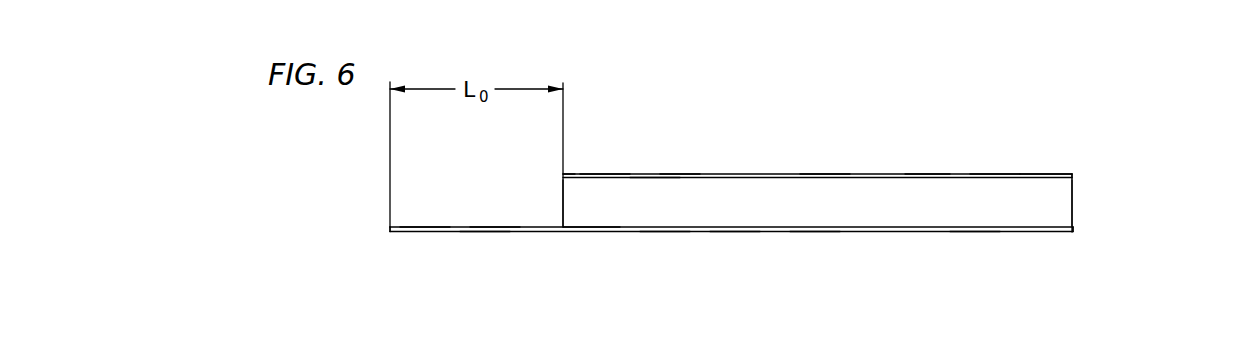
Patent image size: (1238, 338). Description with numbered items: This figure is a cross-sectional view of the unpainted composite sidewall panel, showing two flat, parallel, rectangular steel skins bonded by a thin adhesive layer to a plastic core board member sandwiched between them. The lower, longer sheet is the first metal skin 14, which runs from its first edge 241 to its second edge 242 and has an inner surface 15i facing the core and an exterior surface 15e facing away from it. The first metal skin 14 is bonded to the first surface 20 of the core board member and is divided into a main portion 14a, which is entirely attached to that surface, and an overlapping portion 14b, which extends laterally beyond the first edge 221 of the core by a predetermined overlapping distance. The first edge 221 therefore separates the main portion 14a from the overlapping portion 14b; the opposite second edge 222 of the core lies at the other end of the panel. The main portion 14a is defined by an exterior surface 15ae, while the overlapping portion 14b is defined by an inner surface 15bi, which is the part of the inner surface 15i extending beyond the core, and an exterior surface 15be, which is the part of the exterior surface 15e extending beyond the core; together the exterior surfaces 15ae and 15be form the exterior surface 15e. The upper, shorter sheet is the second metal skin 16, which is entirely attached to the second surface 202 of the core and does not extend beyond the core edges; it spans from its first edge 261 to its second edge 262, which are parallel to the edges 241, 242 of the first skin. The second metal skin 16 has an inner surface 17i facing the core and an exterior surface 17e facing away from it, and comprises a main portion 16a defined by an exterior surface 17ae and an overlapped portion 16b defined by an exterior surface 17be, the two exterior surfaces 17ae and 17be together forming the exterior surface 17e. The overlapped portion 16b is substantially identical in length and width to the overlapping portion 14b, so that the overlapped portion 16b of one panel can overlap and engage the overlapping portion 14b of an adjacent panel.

The first metal skin 14 is at (880, 238).
The main portion 14a is at (732, 232).
The overlapping portion 14b is at (497, 226).
The inner surface of overlapping portion 15bi is at (425, 225).
The exterior surface of overlapping portion 15be is at (482, 232).
The inner surface of first metal skin 15i is at (593, 226).
The exterior surface of main portion 15ae is at (812, 232).
The exterior surface of first metal skin 15e is at (975, 232).
The second metal skin 16 is at (887, 162).
The main portion 16a is at (985, 173).
The overlapped portion 16b is at (602, 172).
The exterior surface of overlapped portion 17be is at (677, 172).
The inner surface of second metal skin 17i is at (650, 178).
The exterior surface of second metal skin 17e is at (817, 173).
The exterior surface of main portion 17ae is at (922, 173).
The first surface 20 is at (665, 232).
The second surface 202 is at (1036, 173).
The first edge 221 is at (562, 207).
The second edge 222 is at (1073, 197).
The first edge 241 is at (390, 229).
The second edge 242 is at (1073, 232).
The first edge 261 is at (562, 175).
The second edge 262 is at (1072, 175).